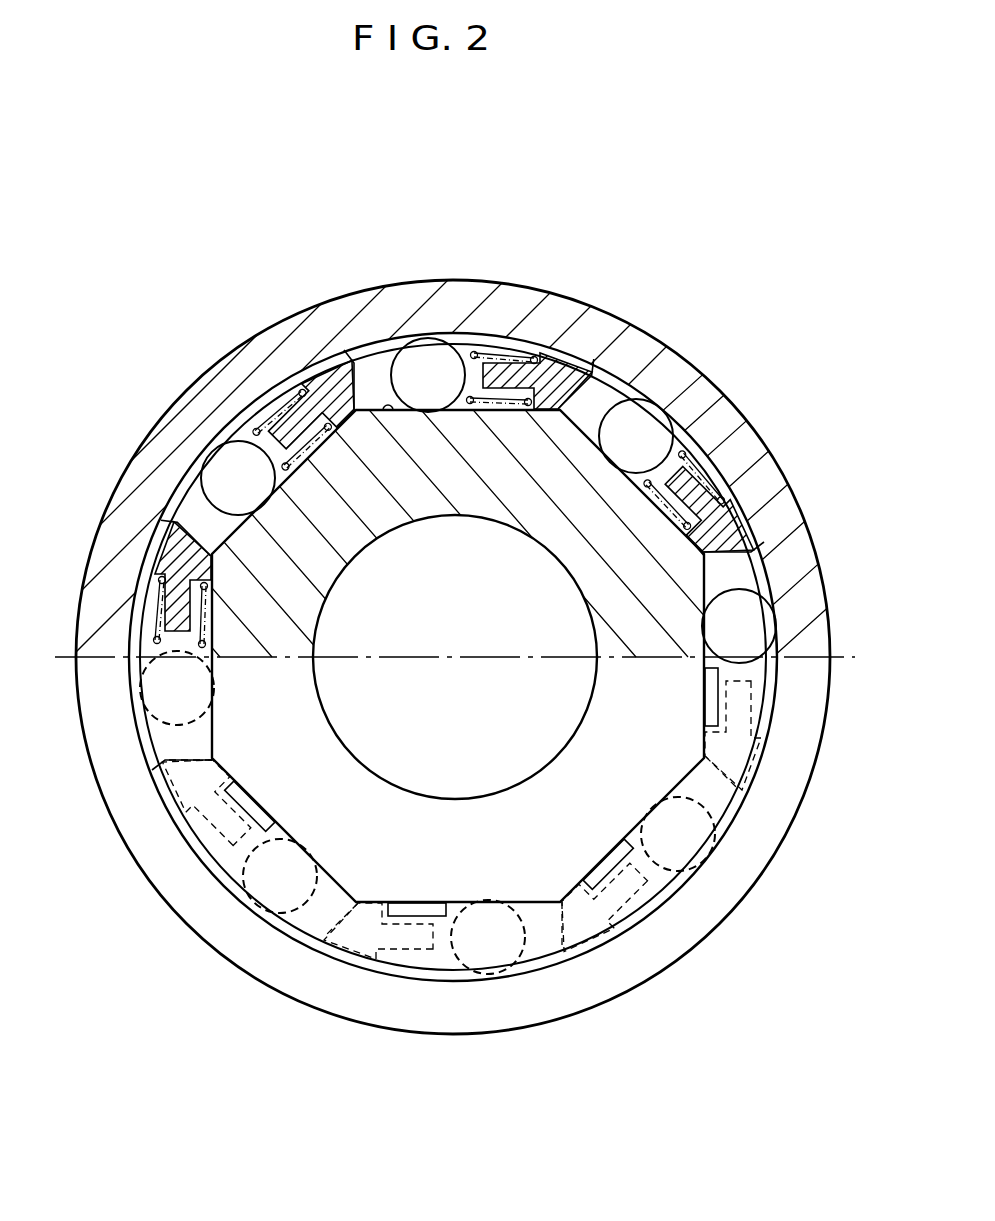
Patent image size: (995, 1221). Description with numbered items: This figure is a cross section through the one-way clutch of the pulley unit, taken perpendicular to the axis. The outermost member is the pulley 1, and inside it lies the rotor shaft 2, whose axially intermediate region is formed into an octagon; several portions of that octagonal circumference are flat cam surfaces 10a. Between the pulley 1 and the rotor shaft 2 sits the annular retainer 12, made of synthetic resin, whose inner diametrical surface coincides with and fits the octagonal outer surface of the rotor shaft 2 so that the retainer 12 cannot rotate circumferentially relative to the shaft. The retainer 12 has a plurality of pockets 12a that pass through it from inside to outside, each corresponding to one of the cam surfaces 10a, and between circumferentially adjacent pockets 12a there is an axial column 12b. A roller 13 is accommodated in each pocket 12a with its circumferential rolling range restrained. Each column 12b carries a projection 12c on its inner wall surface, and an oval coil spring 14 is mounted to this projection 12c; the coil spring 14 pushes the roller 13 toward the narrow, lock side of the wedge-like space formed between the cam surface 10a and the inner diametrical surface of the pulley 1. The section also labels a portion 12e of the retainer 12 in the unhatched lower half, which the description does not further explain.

The pulley 1 is at (748, 440).
The rotor shaft 2 is at (583, 562).
The cam surface 10a is at (395, 412).
The retainer 12 is at (482, 587).
The pocket 12a is at (345, 315).
The column 12b is at (569, 318).
The projection 12c is at (527, 308).
The slot 12e is at (255, 803).
The roller 13 is at (427, 368).
The coil spring 14 is at (474, 352).